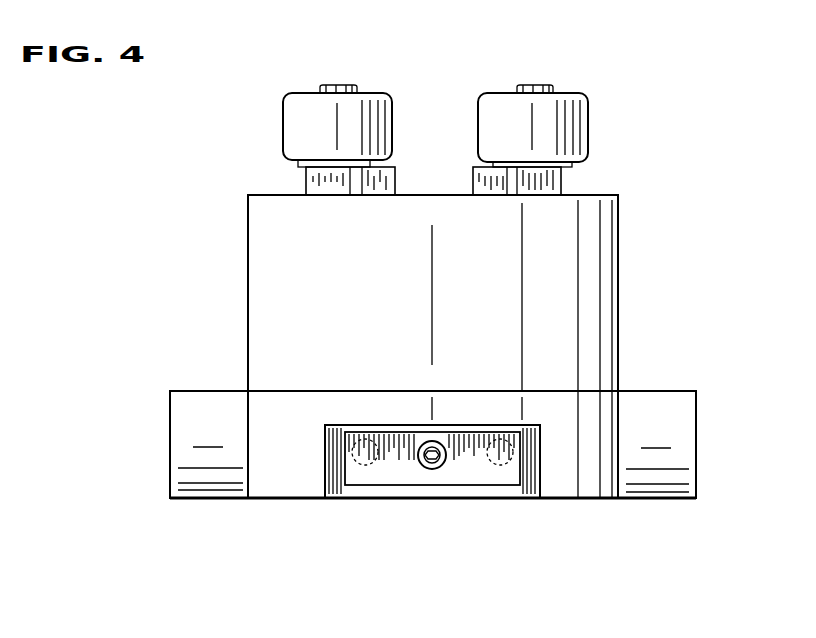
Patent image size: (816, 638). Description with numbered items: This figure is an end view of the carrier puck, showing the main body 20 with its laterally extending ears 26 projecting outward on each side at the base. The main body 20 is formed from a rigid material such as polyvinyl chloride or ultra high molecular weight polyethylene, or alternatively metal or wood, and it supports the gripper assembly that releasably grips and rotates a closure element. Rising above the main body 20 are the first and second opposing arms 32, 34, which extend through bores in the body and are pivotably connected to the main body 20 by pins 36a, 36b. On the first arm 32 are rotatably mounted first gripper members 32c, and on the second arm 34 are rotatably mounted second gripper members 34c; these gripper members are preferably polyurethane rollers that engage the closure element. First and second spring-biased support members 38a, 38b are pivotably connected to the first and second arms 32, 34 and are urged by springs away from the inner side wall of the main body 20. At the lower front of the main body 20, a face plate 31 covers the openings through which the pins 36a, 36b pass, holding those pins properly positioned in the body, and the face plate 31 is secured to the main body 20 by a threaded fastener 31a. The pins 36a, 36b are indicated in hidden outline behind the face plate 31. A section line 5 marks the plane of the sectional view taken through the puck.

The main body 20 is at (592, 262).
The laterally extending ears 26 is at (202, 400).
The face plate 31 is at (467, 472).
The threaded fastener 31a is at (432, 470).
The first arm 32 is at (315, 183).
The first gripper members 32c is at (292, 112).
The second arm 34 is at (552, 183).
The second gripper members 34c is at (578, 120).
The pin 36a is at (367, 458).
The pin 36b is at (507, 458).
The first spring-biased support member 38a is at (394, 178).
The second spring-biased support member 38b is at (482, 190).
The section line 5- 5 is at (779, 462).